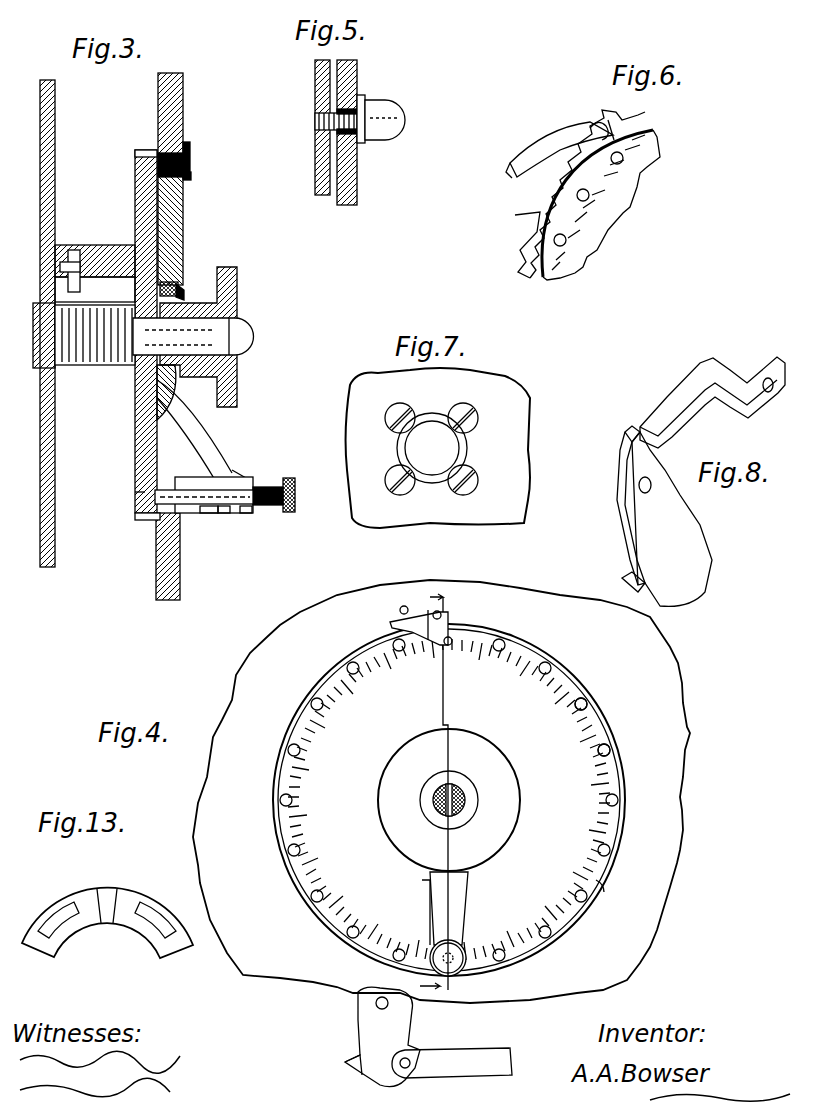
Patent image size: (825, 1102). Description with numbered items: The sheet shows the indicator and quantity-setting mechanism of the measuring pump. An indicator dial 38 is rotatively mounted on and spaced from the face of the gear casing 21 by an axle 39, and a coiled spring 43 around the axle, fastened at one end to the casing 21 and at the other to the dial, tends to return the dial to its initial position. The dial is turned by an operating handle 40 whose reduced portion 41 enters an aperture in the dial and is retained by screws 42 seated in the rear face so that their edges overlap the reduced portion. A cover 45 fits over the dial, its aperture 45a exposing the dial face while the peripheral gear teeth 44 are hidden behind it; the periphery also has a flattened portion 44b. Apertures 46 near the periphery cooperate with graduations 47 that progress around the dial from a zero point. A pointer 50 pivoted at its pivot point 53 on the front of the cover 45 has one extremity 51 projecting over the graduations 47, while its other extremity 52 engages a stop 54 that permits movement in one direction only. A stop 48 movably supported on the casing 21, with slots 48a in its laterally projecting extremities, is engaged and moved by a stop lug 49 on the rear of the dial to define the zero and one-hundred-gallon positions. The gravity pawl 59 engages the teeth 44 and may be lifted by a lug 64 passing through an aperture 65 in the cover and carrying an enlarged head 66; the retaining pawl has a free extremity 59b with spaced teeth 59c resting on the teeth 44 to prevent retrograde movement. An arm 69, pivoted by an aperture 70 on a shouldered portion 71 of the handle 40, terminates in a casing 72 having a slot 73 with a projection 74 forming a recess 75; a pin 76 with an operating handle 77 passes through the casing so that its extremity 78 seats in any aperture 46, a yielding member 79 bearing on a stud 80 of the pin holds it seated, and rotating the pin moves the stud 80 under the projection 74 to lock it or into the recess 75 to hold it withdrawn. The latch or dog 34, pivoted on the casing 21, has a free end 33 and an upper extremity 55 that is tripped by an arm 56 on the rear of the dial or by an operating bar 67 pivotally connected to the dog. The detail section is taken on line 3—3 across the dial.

In FIG. 3, the gear casing 21 is at (55, 140).
In FIG. 3, the cover 45 is at (165, 122).
In FIG. 5, the cover 45 is at (350, 178).
In FIG. 4, the cover 45 is at (670, 920).
In FIG. 3, the aperture 45a is at (178, 207).
In FIG. 4, the aperture 45a is at (598, 886).
In FIG. 3, the pointer 50 is at (191, 156).
In FIG. 4, the pointer 50 is at (426, 620).
In FIG. 3, the extremity of pointer 51 is at (191, 178).
In FIG. 4, the extremity of pointer 51 is at (450, 647).
In FIG. 3, the indicator dial 38 is at (145, 196).
In FIG. 6, the indicator dial 38 is at (592, 251).
In FIG. 7, the indicator dial 38 is at (505, 410).
In FIG. 4, the indicator dial 38 is at (545, 708).
In FIG. 3, the stop lug 49 is at (115, 245).
In FIG. 3, the stop 48 is at (62, 256).
In FIG. 13, the stop 48 is at (97, 903).
In FIG. 13, the slots 48a is at (58, 920).
In FIG. 3, the reduced portion 41 is at (148, 362).
In FIG. 7, the reduced portion 41 is at (437, 417).
In FIG. 3, the coiled spring 43 is at (100, 366).
In FIG. 3, the operating handle 40 is at (237, 291).
In FIG. 4, the operating handle 40 is at (505, 786).
In FIG. 3, the axle 39 is at (205, 336).
In FIG. 3, the aperture 70 is at (170, 283).
In FIG. 3, the shouldered portion 71 is at (181, 292).
In FIG. 3, the arm 69 is at (220, 452).
In FIG. 4, the arm 69 is at (465, 907).
In FIG. 3, the stud 80 is at (243, 470).
In FIG. 3, the casing 72 is at (240, 480).
In FIG. 3, the slot 73 is at (195, 490).
In FIG. 3, the pin 76 is at (268, 487).
In FIG. 3, the operating handle 77 is at (295, 493).
In FIG. 4, the operating handle 77 is at (460, 968).
In FIG. 3, the apertures 46 is at (135, 492).
In FIG. 6, the apertures 46 is at (565, 243).
In FIG. 4, the apertures 46 is at (398, 651).
In FIG. 3, the extremity of pin 78 is at (155, 521).
In FIG. 3, the recess 75 is at (226, 514).
In FIG. 3, the yielding member 79 is at (245, 514).
In FIG. 3, the projection 74 is at (210, 515).
In FIG. 5, the pawl 59 is at (316, 88).
In FIG. 5, the projecting lug 64 is at (316, 122).
In FIG. 5, the aperture 65 is at (358, 100).
In FIG. 5, the enlarged head 66 is at (388, 112).
In FIG. 6, the gear teeth 44 is at (535, 192).
In FIG. 6, the flattened portion 44b is at (614, 140).
In FIG. 6, the free extremity of retaining pawl 59b is at (540, 150).
In FIG. 6, the spaced teeth 59c is at (592, 132).
In FIG. 7, the screws 42 is at (393, 475).
In FIG. 8, the arm 56 is at (714, 366).
In FIG. 8, the upper extremity of dog 55 is at (628, 456).
In FIG. 8, the latch or dog 34 is at (700, 560).
In FIG. 4, the latch or dog 34 is at (372, 1012).
In FIG. 8, the free end of dog 33 is at (628, 580).
In FIG. 4, the free end of dog 33 is at (348, 1063).
In FIG. 4, the graduations 47 is at (607, 827).
In FIG. 4, the extremity of pointer 52 is at (392, 625).
In FIG. 4, the pivot point 53 is at (442, 615).
In FIG. 4, the stop 54 is at (400, 610).
In FIG. 4, the section line 3 is at (434, 792).
In FIG. 4, the operating bar 67 is at (490, 1070).